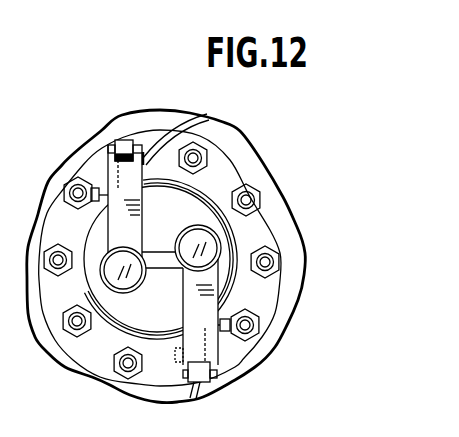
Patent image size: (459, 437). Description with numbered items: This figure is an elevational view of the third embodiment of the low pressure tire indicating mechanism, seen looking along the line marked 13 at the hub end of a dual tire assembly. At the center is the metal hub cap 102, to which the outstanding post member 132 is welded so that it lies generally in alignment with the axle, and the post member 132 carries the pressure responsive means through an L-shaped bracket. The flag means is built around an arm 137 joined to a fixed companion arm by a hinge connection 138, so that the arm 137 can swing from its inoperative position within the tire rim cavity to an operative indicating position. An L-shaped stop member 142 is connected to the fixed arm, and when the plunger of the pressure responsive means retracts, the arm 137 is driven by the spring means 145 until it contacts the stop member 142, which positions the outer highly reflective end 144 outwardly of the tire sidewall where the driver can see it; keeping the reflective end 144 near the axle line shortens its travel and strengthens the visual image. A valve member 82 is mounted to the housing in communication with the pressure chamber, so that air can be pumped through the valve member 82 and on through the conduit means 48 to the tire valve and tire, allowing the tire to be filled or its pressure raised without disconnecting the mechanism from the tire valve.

The section line 13- 13 is at (143, 132).
The conduit means 48 is at (200, 123).
The valve member 82 is at (106, 168).
The metal hub cap 102 is at (229, 242).
The outstanding post member 132 is at (158, 257).
The arm 137 is at (143, 203).
The hinge connection 138 is at (110, 144).
The L-shaped stop member 142 is at (122, 140).
The outer highly reflective end 144 is at (113, 262).
The spring means 145 is at (106, 158).